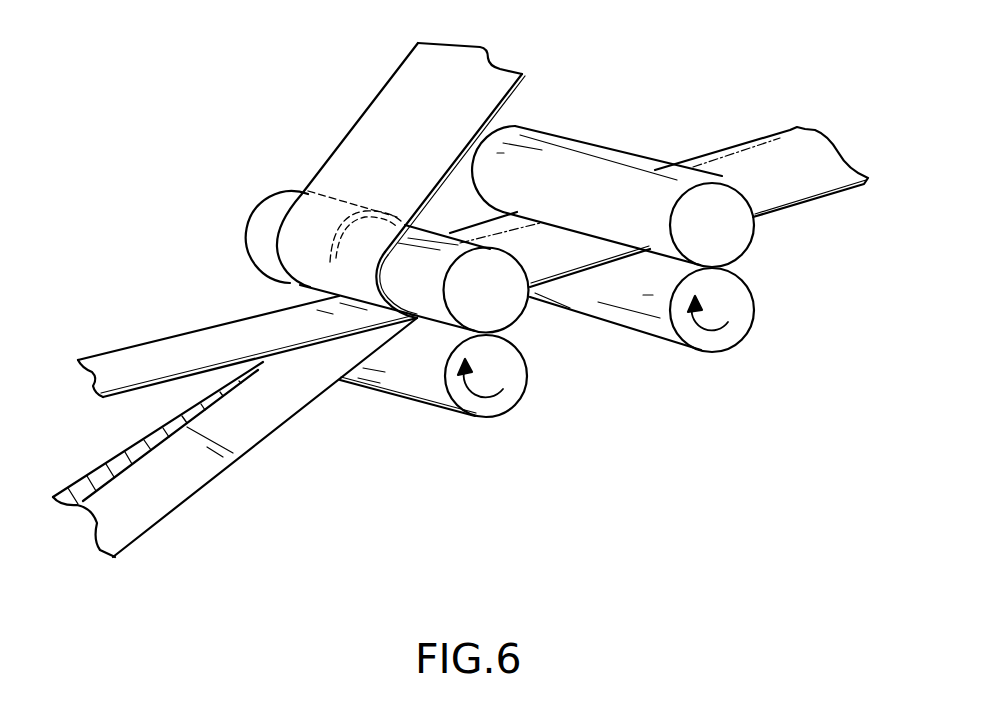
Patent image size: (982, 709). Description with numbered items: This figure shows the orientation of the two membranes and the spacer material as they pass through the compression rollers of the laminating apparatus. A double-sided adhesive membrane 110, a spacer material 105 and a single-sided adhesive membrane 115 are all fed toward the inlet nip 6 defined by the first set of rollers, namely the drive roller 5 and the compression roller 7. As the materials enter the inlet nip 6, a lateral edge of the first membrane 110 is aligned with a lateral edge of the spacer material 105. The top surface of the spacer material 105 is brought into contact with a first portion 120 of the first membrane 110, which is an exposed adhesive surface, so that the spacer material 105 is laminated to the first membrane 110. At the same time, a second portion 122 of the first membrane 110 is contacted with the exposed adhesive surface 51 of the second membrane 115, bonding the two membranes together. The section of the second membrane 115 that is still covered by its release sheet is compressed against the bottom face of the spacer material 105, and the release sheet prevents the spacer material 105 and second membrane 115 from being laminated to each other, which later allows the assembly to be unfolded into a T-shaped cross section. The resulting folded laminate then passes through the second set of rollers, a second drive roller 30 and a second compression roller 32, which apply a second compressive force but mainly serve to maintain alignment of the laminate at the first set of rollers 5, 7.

The drive roller 5 is at (518, 320).
The inlet nip 6 is at (444, 332).
The compression roller 7 is at (476, 412).
The second drive roller 30 is at (704, 207).
The second compression roller 32 is at (742, 300).
The adhesive layer 51 is at (105, 467).
The spacer material 105 is at (123, 357).
The double-sided adhesive membrane 110 is at (397, 90).
The single-sided adhesive membrane 115 is at (172, 488).
The first portion 120 is at (410, 312).
The second portion 122 is at (333, 283).